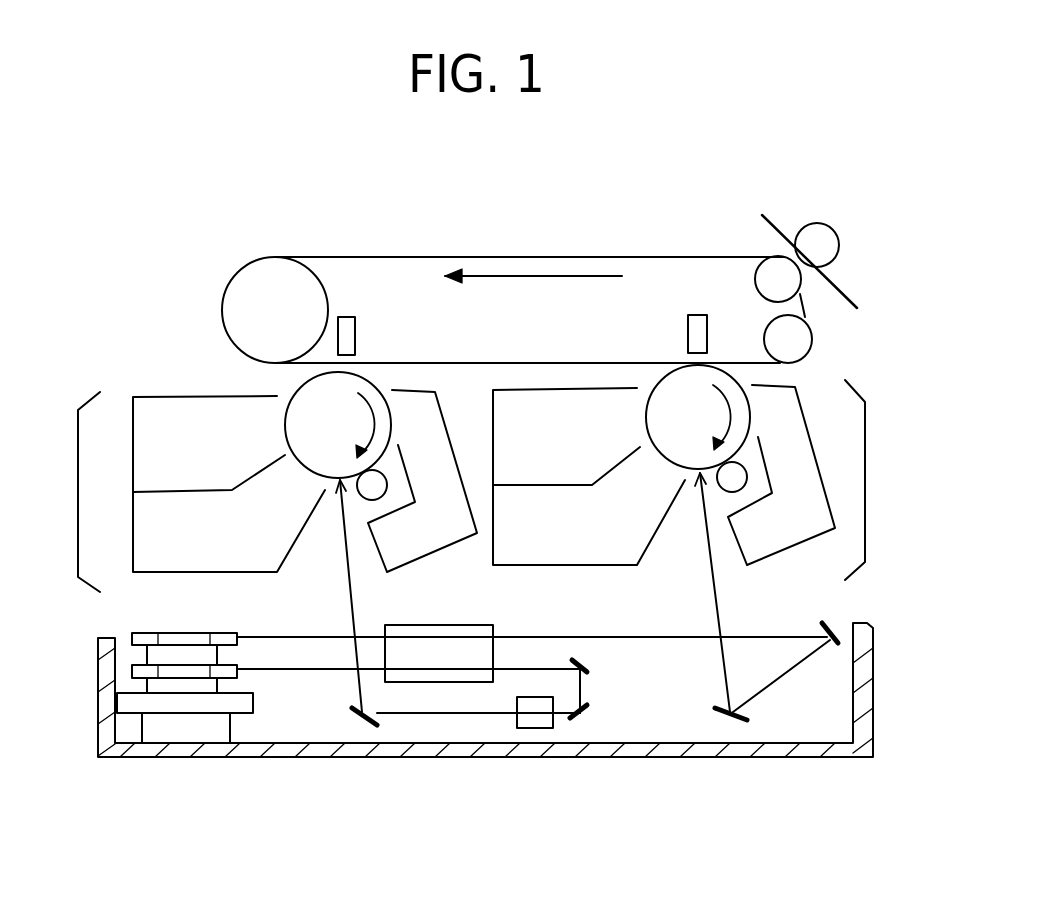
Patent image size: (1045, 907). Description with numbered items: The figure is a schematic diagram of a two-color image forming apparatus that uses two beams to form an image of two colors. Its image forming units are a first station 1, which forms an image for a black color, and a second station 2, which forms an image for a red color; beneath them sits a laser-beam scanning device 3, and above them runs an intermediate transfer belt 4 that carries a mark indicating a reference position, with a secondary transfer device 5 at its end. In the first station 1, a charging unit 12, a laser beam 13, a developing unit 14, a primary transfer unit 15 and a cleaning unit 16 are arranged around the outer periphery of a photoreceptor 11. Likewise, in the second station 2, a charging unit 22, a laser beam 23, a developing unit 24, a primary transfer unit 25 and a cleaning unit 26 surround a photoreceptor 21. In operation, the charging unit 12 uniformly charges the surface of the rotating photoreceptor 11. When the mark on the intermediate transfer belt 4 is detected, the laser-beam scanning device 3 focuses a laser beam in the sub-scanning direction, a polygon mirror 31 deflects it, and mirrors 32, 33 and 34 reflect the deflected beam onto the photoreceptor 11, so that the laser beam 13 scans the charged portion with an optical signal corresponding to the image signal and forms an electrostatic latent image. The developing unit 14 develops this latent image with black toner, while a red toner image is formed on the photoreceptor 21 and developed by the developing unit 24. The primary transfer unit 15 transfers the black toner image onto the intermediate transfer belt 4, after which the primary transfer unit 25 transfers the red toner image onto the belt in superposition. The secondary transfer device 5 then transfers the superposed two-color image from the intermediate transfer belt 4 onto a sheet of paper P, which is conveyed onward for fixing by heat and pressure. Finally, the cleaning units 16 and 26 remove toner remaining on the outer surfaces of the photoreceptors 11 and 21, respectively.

The first station 1 is at (67, 492).
The second station 2 is at (875, 486).
The laser-beam scanning device 3 is at (880, 698).
The intermediate transfer belt 4 is at (637, 254).
The secondary transfer device 5 is at (842, 257).
The sheet of paper P is at (840, 307).
The photoreceptor 11 is at (330, 437).
The charging unit 12 is at (372, 485).
The laser beam 13 is at (352, 560).
The developing unit 14 is at (182, 572).
The primary transfer unit 15 is at (356, 328).
The cleaning unit 16 is at (422, 481).
The photoreceptor 21 is at (690, 432).
The charging unit 22 is at (732, 477).
The laser beam 23 is at (710, 557).
The developing unit 24 is at (533, 565).
The primary transfer unit 25 is at (708, 326).
The cleaning unit 26 is at (781, 475).
The polygon mirror 31 is at (208, 633).
The mirror 32 is at (588, 663).
The mirror 33 is at (588, 712).
The mirror 34 is at (352, 718).